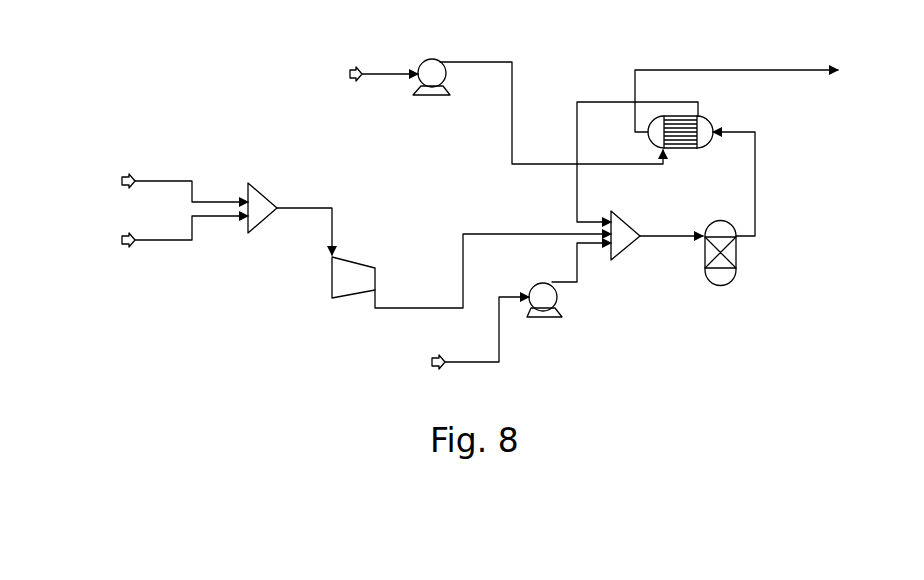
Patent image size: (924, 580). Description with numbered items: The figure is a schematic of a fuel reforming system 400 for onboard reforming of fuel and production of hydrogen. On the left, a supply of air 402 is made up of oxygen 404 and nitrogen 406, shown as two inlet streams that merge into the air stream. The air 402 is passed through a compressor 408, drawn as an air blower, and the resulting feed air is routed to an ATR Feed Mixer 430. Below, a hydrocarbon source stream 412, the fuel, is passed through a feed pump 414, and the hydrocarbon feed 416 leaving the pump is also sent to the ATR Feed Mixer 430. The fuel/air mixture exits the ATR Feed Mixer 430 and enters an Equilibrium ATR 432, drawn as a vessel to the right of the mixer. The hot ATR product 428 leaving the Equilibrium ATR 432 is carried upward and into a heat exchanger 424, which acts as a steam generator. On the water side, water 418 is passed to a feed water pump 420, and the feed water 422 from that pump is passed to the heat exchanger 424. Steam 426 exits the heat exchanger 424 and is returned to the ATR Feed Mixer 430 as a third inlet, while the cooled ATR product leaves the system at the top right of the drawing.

The fuel reforming system 400 is at (222, 31).
The supply of air 402 is at (338, 215).
The oxygen 404 is at (153, 182).
The nitrogen 406 is at (153, 240).
The compressor 408 is at (326, 299).
The hydrocarbon source stream 412 is at (466, 374).
The feed pump 414 is at (592, 345).
The hydrocarbon feed 416 is at (575, 254).
The water 418 is at (318, 69).
The feed water pump 420 is at (418, 81).
The feed water 422 is at (548, 38).
The heat exchanger 424 is at (708, 115).
The steam 426 is at (606, 78).
The hot ATR product 428 is at (830, 173).
The ATR Feed Mixer 430 is at (637, 228).
The Equilibrium ATR 432 is at (745, 257).